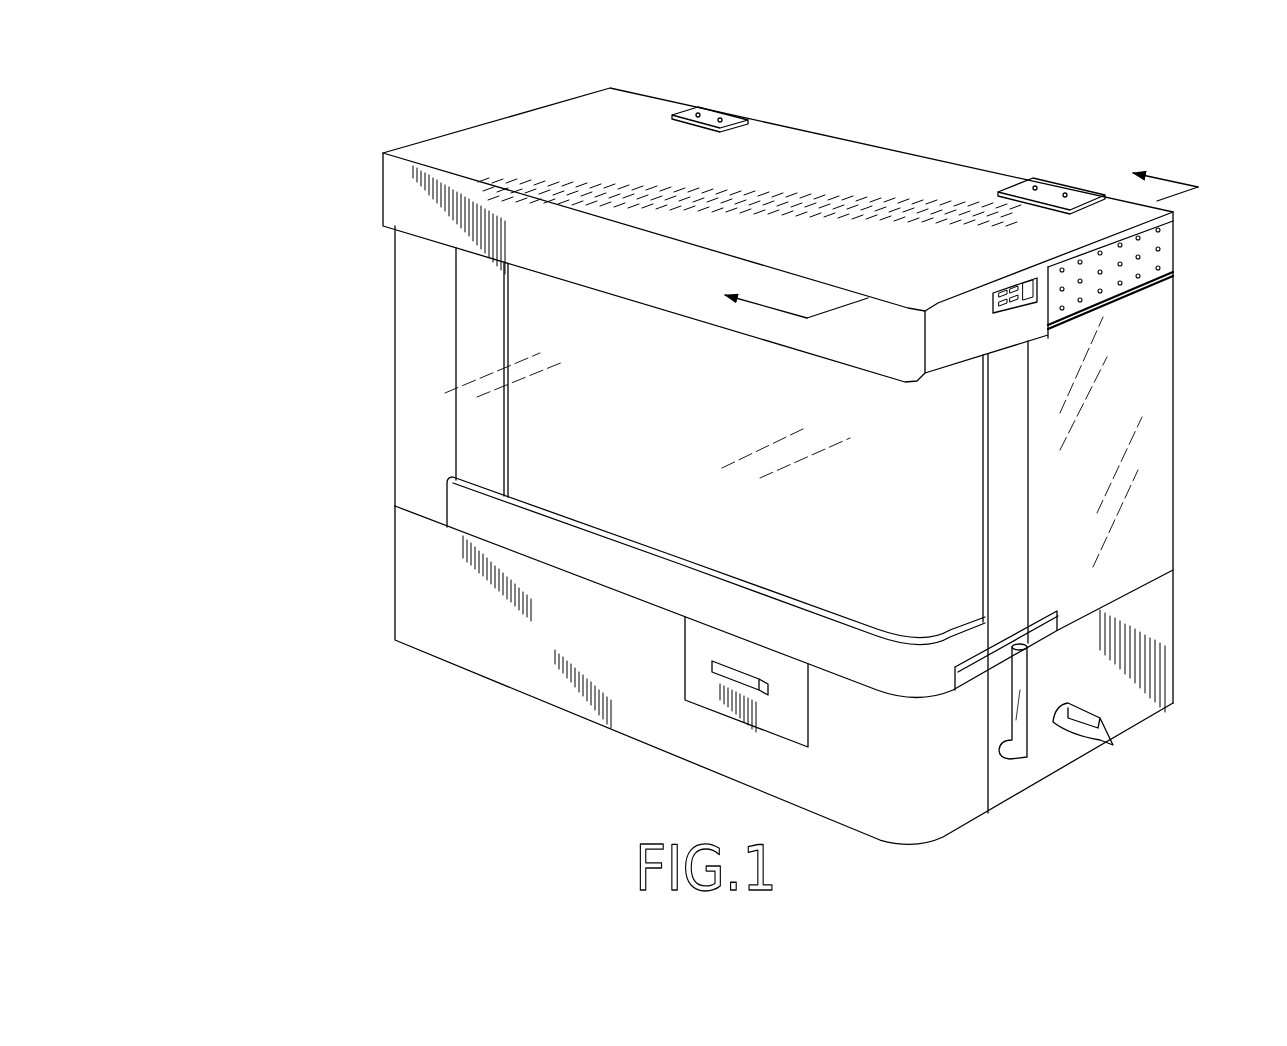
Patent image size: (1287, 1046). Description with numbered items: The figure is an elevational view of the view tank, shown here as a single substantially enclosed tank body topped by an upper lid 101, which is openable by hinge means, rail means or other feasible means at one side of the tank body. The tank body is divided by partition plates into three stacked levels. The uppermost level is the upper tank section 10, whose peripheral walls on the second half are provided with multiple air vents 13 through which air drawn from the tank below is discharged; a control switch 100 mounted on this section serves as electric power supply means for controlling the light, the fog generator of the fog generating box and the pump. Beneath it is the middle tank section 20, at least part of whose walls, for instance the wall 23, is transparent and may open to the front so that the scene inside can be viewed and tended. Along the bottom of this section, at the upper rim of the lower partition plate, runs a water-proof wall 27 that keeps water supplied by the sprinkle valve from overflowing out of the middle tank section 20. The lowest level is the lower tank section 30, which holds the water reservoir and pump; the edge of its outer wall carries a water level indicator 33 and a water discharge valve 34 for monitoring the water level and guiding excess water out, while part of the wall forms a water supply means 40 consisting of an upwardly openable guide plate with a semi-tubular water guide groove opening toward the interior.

The upper tank section 10 is at (739, 455).
The upper lid 101 is at (811, 388).
The air vents 13 is at (1158, 230).
The control switch 100 is at (993, 303).
The middle tank section 20 is at (691, 519).
The openable wall 23 is at (414, 399).
The water-proof wall 27 is at (722, 587).
The lower tank section 30 is at (708, 666).
The water supply means 40 is at (785, 727).
The water level indicator 33 is at (1018, 682).
The water discharge valve 34 is at (1100, 748).